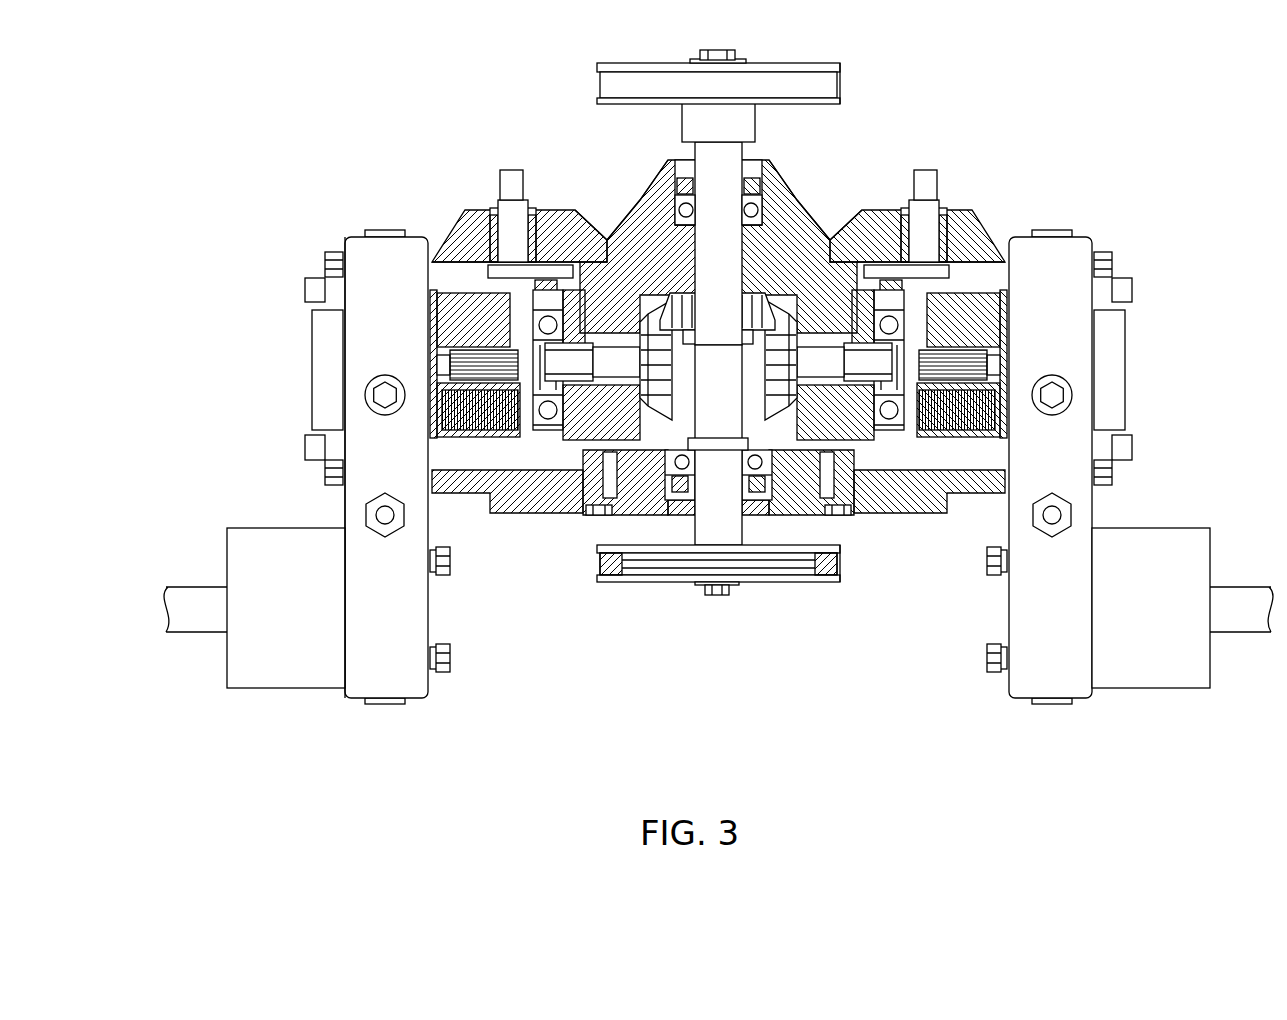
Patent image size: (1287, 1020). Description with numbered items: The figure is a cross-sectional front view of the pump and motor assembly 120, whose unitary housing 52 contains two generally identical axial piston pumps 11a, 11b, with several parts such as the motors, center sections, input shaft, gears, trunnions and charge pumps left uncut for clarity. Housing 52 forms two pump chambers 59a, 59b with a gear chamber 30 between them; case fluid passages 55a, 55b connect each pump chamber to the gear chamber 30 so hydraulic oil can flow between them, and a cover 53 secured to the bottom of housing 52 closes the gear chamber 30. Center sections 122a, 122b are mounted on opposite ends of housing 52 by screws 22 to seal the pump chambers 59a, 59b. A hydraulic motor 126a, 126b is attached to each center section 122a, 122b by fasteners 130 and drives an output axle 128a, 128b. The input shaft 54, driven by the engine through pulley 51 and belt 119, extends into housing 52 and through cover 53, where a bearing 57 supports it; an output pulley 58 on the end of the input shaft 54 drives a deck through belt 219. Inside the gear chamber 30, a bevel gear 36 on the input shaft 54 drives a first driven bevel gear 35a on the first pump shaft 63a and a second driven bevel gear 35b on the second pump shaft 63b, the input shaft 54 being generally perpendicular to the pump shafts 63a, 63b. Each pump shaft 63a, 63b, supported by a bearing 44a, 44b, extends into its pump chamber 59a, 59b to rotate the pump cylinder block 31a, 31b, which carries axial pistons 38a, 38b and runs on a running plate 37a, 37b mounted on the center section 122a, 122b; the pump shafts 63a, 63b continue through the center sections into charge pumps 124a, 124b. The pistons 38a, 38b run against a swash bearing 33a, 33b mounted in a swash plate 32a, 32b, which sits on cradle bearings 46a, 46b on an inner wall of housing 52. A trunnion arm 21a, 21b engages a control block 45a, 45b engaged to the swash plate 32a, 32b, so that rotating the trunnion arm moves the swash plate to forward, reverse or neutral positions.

The pump and motor assembly 120 is at (296, 104).
The pump 11a is at (438, 198).
The pump 11b is at (1000, 198).
The trunnion arm 21a is at (508, 170).
The trunnion arm 21b is at (928, 170).
The screws 22 is at (325, 262).
The pulley 51 is at (608, 63).
The belt 119 is at (843, 85).
The housing 52 is at (650, 165).
The input shaft 54 is at (733, 197).
The bearing 44a is at (640, 198).
The bearing 44b is at (795, 198).
The control block 45a is at (597, 232).
The control block 45b is at (840, 238).
The running plate 37a is at (432, 305).
The running plate 37b is at (1010, 336).
The charge pump 124a is at (312, 376).
The charge pump 124b is at (1125, 376).
The first pump shaft 63a is at (588, 374).
The second pump shaft 63b is at (895, 374).
The bevel gear 36 is at (722, 331).
The first driven bevel gear 35a is at (673, 403).
The second driven bevel gear 35b is at (757, 381).
The swash bearing 33a is at (541, 430).
The swash bearing 33b is at (895, 430).
The pump chamber 59a is at (445, 453).
The pump chamber 59b is at (992, 453).
The axial pistons 38a is at (472, 440).
The axial pistons 38b is at (964, 440).
The pump cylinder block 31a is at (486, 444).
The pump cylinder block 31b is at (950, 444).
The swash plate 32a is at (566, 442).
The swash plate 32b is at (870, 442).
The cradle bearings 46a is at (586, 444).
The cradle bearings 46b is at (850, 444).
The case fluid passage 55a is at (632, 505).
The case fluid passage 55b is at (808, 505).
The gear chamber 30 is at (694, 500).
The bearing 57 is at (690, 463).
The cover 53 is at (790, 515).
The output pulley 58 is at (782, 583).
The belt 219 is at (838, 576).
The center section 122a is at (413, 587).
The center section 122b is at (1081, 587).
The hydraulic motor 126a is at (313, 617).
The hydraulic motor 126b is at (1181, 604).
The output axle 128a is at (190, 633).
The output axle 128b is at (1240, 633).
The fasteners 130 is at (452, 658).